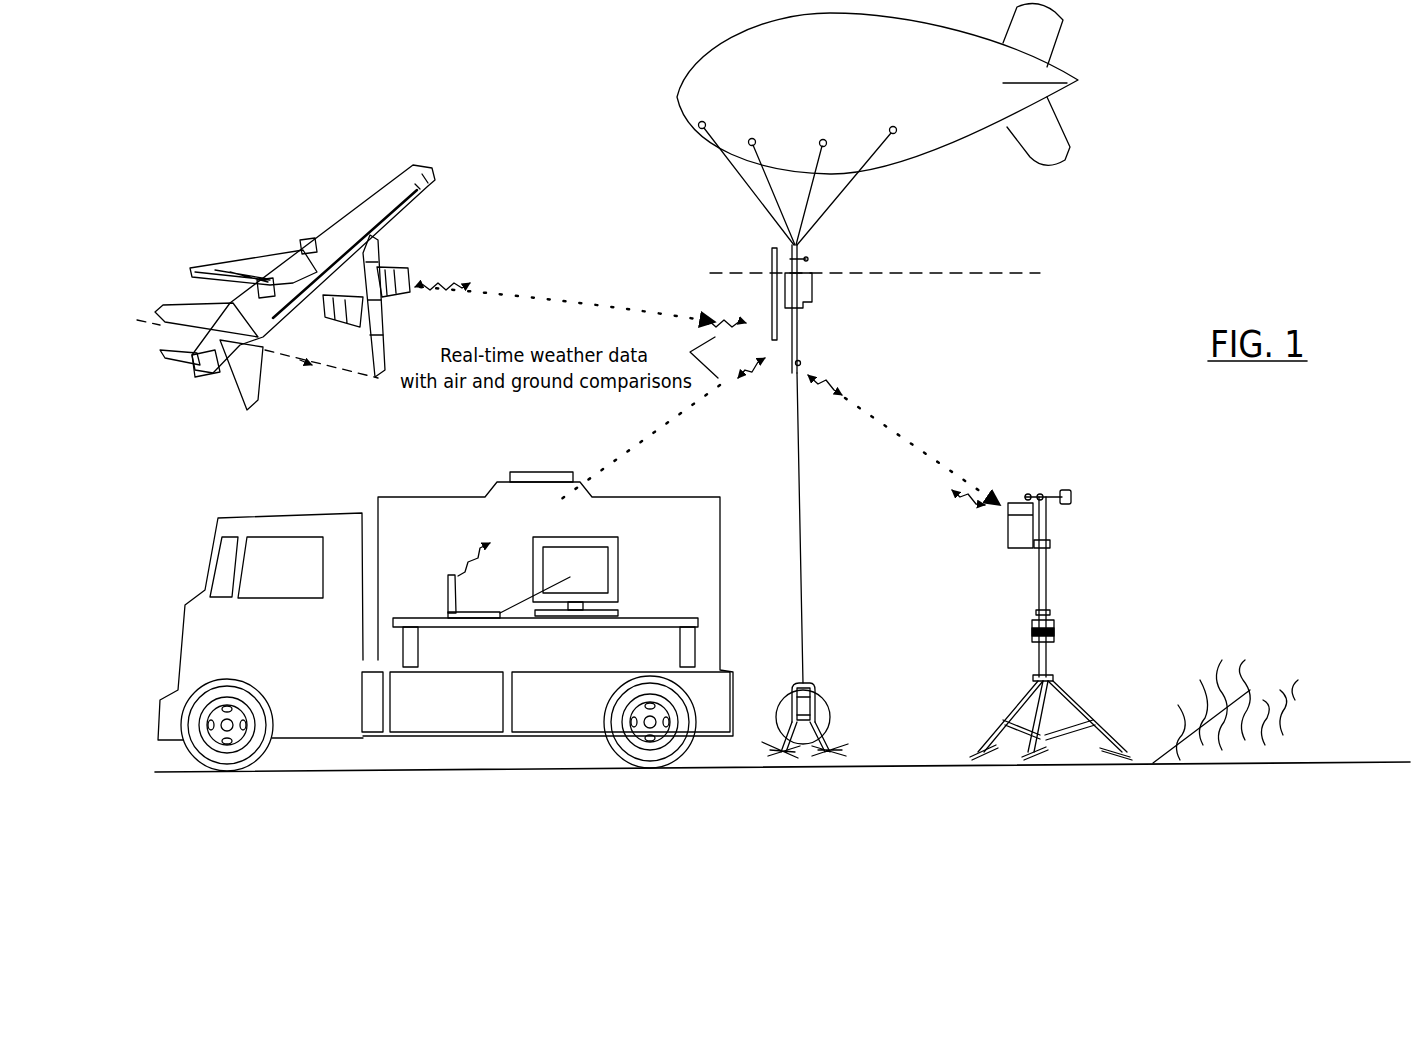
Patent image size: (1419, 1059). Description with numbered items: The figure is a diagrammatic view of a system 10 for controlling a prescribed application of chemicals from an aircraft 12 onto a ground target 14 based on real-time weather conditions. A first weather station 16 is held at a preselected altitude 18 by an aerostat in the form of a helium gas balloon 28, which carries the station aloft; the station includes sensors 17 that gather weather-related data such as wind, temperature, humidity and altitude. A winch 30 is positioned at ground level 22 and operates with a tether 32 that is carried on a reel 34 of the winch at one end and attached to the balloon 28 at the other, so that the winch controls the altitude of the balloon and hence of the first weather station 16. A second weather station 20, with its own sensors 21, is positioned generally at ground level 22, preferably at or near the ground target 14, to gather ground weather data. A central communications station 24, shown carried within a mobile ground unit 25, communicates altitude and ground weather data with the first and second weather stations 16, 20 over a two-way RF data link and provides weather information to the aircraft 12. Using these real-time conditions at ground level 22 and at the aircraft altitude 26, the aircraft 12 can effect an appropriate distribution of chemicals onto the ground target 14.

The system 10 is at (1128, 144).
The aircraft 12 is at (362, 222).
The ground target 14 is at (1285, 657).
The first weather station 16 is at (757, 262).
The sensors 17 is at (804, 287).
The preselected altitude 18 is at (1014, 270).
The second weather station 20 is at (1174, 625).
The sensors 21 is at (1050, 538).
The ground level 22 is at (1110, 485).
The central communications station 24 is at (650, 503).
The mobile ground unit 25 is at (735, 540).
The aircraft altitude 26 is at (299, 378).
The helium gas balloon 28 is at (932, 36).
The winch 30 is at (833, 698).
The tether 32 is at (800, 488).
The reel 34 is at (824, 712).